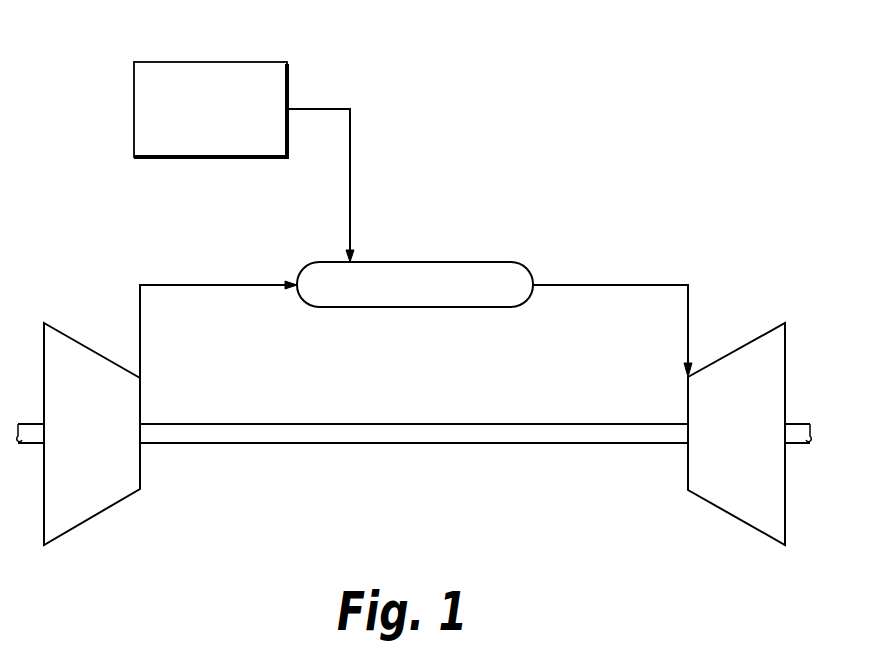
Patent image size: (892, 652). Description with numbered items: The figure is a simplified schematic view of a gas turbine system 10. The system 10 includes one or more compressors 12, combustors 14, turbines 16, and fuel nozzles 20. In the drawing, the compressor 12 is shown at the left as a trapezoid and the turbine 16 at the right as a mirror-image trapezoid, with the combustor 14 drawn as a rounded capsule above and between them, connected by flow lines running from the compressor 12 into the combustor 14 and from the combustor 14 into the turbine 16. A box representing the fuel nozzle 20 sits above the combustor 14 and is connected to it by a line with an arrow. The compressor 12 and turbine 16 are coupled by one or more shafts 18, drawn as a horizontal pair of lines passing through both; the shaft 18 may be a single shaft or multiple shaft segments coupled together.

The gas turbine system 10 is at (670, 200).
The compressor 12 is at (92, 518).
The combustor 14 is at (413, 262).
The turbine 16 is at (785, 340).
The shaft 18 is at (413, 443).
The fuel nozzle 20 is at (287, 62).